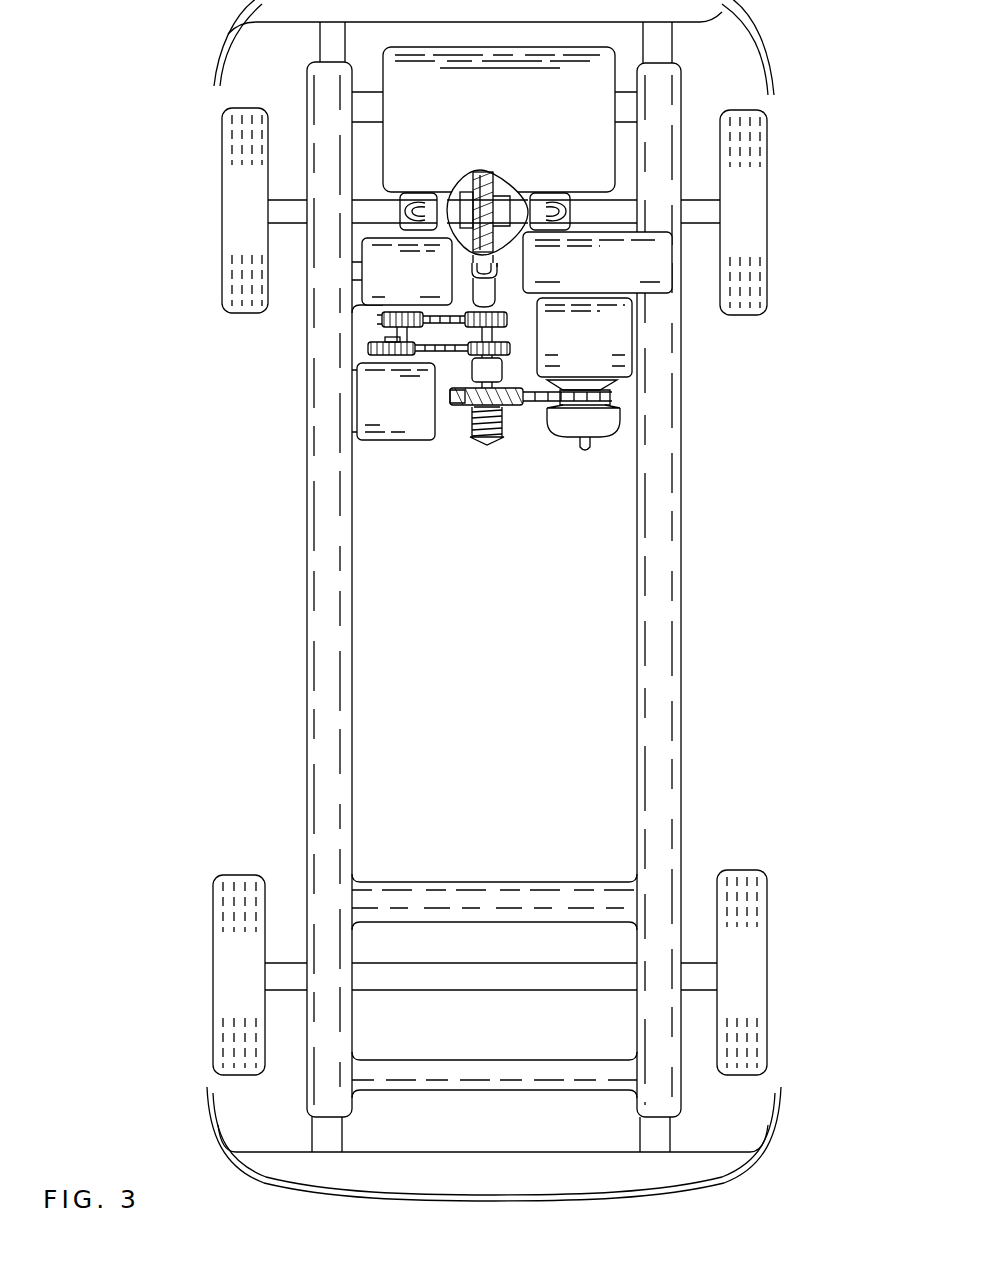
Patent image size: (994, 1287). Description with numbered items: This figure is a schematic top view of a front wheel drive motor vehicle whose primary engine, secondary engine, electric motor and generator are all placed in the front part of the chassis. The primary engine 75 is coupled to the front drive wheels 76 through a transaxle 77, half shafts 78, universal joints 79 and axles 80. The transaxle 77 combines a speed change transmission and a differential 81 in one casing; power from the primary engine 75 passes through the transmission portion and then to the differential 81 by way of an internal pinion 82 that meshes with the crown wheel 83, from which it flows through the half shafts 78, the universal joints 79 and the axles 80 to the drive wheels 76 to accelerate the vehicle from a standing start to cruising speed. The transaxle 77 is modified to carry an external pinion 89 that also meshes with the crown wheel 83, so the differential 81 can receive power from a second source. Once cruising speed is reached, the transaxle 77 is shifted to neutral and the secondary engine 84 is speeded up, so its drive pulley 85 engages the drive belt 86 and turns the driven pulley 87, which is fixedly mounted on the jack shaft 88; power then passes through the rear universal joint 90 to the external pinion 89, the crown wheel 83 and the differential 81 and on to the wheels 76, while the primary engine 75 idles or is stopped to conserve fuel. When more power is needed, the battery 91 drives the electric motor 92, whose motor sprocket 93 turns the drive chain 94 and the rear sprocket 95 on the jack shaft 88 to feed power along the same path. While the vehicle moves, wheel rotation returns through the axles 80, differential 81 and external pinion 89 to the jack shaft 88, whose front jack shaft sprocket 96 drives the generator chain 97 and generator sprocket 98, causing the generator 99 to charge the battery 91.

The primary engine 75 is at (481, 110).
The front drive wheels 76 is at (222, 178).
The transaxle 77 is at (519, 168).
The half shafts 78 is at (434, 193).
The universal joints 79 is at (413, 205).
The axles 80 is at (291, 199).
The differential 81 is at (503, 197).
The internal pinion 82 is at (480, 190).
The crown wheel 83 is at (492, 188).
The secondary engine 84 is at (566, 363).
The drive pulley 85 is at (600, 432).
The drive belt 86 is at (545, 405).
The driven pulley 87 is at (517, 405).
The jack shaft 88 is at (510, 330).
The external pinion 89 is at (497, 296).
The rear universal joint 90 is at (505, 308).
The battery 91 is at (580, 279).
The electric motor 92 is at (379, 411).
The motor sprocket 93 is at (466, 350).
The drive chain 94 is at (462, 348).
The rear sprocket 95 is at (478, 440).
The front jack shaft sprocket 96 is at (497, 267).
The generator chain 97 is at (372, 340).
The generator sprocket 98 is at (380, 312).
The generator 99 is at (384, 285).